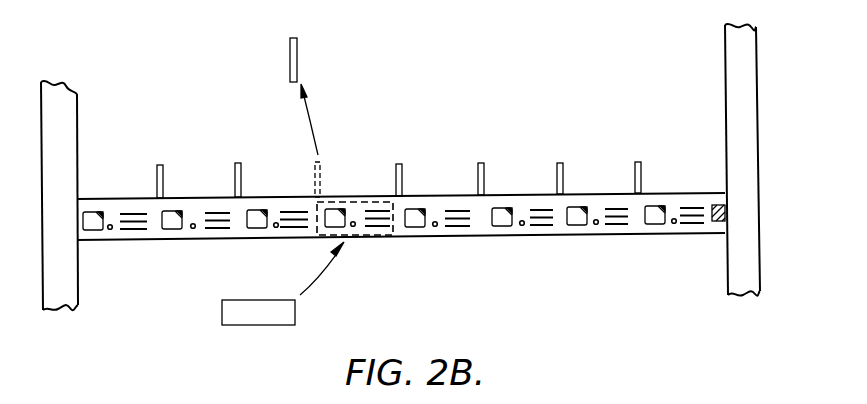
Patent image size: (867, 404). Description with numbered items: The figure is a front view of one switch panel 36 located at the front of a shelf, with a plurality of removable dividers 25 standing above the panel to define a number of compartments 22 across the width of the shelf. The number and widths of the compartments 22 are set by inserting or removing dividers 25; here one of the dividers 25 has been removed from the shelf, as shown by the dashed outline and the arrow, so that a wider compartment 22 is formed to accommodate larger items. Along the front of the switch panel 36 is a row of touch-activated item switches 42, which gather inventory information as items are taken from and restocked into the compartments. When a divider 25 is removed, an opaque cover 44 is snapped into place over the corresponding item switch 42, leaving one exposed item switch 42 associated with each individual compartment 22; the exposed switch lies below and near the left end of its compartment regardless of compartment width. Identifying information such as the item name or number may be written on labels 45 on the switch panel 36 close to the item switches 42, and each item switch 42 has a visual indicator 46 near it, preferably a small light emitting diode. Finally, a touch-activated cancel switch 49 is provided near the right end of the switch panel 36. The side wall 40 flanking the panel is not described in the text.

The compartment 22 is at (342, 183).
The removable divider 25 is at (297, 43).
The switch panel 36 is at (447, 238).
The side wall 40 is at (78, 163).
The touch-activated item switch 42 is at (327, 225).
The opaque cover 44 is at (252, 318).
The label 45 is at (552, 227).
The visual indicator 46 is at (193, 229).
The touch-activated cancel switch 49 is at (720, 229).